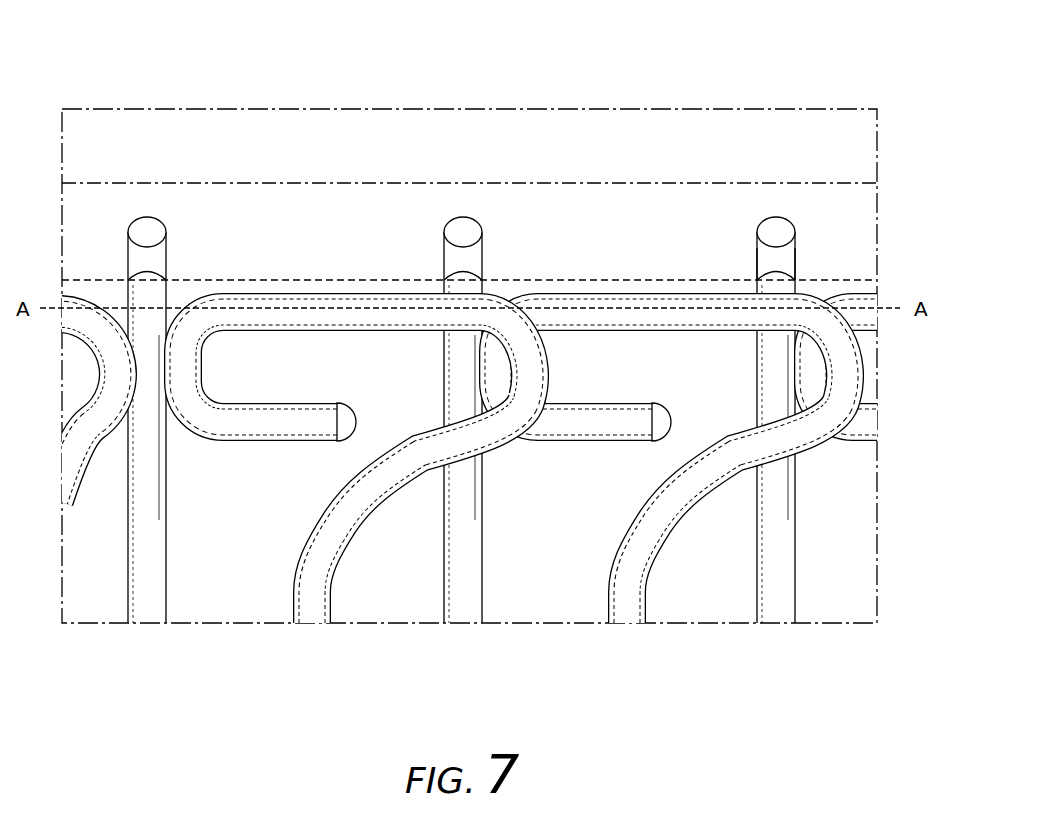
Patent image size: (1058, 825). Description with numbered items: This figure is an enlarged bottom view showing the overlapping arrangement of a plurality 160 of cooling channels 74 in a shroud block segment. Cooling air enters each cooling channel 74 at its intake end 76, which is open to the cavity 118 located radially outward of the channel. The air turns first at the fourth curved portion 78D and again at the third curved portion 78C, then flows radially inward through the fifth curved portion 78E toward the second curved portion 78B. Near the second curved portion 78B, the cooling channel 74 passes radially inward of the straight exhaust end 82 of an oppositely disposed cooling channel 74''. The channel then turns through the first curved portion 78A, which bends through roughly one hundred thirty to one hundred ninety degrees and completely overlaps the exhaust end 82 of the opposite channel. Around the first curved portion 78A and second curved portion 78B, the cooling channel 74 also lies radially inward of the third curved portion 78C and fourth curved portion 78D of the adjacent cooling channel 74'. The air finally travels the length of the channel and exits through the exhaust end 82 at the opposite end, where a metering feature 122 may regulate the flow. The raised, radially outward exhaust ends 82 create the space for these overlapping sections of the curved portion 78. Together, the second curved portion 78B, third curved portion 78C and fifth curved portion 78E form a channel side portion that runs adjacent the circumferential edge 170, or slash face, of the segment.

The cooling channel 74 is at (299, 643).
The adjacent cooling channel 74' is at (657, 641).
The oppositely disposed cooling channel 74'' is at (484, 466).
The intake end 76 is at (322, 430).
The curved portion 78 is at (857, 323).
The first curved portion 78A is at (498, 453).
The second curved portion 78B is at (496, 307).
The third curved portion 78C is at (220, 317).
The fourth curved portion 78D is at (200, 436).
The fifth curved portion 78E is at (355, 305).
The exhaust end 82 is at (463, 257).
The cavity 118 is at (235, 563).
The metering feature 122 is at (757, 257).
The plurality of cooling channels 160 is at (419, 652).
The circumferential edge 170 is at (613, 182).